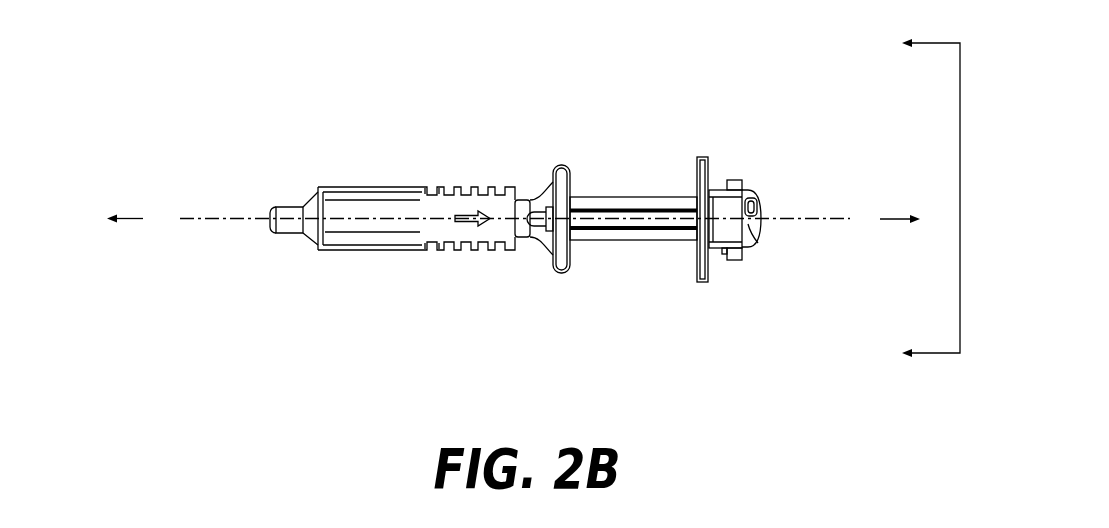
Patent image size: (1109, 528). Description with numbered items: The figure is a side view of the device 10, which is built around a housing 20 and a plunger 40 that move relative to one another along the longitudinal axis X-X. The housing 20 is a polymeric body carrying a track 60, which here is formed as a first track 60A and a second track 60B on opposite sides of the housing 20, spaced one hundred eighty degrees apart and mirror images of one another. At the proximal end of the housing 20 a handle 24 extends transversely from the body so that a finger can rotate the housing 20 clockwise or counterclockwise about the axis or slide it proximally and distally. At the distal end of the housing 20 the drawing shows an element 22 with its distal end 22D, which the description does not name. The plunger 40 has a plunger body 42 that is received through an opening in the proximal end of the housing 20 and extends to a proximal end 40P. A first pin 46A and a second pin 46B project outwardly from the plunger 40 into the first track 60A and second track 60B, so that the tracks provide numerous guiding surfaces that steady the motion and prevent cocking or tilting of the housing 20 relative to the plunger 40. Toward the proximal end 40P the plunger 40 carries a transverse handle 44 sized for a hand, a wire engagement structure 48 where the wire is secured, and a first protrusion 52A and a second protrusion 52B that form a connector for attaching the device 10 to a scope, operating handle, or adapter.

The device 10 is at (292, 78).
The housing 20 is at (364, 274).
The distal tip 22 is at (288, 208).
The distal end of tip 22D is at (265, 234).
The handle 24 is at (562, 163).
The plunger 40 is at (726, 284).
The proximal end of plunger 40P is at (757, 196).
The plunger body 42 is at (629, 206).
The handle 44 is at (703, 155).
The first pin 46A is at (516, 182).
The second pin 46B is at (526, 254).
The wire engagement structure 48 is at (760, 207).
The first protrusion 52A is at (737, 178).
The second protrusion 52B is at (742, 259).
The track 60 is at (487, 286).
The first track 60A is at (465, 187).
The second track 60B is at (462, 250).